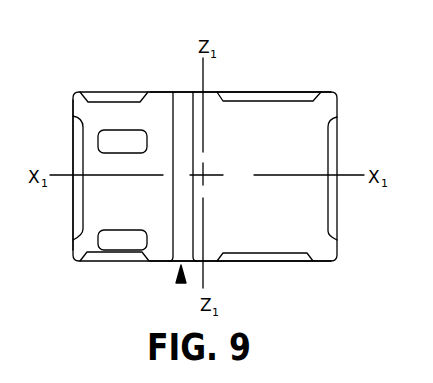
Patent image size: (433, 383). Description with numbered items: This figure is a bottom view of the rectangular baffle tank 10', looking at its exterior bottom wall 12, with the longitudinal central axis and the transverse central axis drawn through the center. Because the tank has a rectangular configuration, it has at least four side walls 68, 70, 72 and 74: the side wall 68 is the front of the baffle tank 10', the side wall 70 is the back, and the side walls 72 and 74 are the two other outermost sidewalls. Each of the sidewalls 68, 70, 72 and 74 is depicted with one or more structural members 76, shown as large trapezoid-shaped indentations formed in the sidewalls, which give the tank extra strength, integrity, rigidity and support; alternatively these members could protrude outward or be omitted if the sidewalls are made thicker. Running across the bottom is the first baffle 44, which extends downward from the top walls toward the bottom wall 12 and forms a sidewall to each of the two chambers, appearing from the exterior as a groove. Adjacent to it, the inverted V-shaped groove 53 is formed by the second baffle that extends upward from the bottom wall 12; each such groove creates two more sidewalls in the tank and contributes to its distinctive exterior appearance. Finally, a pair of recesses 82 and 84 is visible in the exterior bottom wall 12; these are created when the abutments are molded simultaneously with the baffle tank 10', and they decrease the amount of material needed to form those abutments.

The baffle tank 10' is at (213, 166).
The bottom wall 12 is at (274, 215).
The first baffle 44 is at (183, 103).
The inverted V-shaped groove 53 is at (180, 283).
The side wall 68 is at (320, 261).
The side wall 70 is at (323, 92).
The side wall 72 is at (340, 108).
The side wall 74 is at (72, 107).
The structural member 76 is at (110, 96).
The recess 82 is at (125, 230).
The recess 84 is at (130, 152).